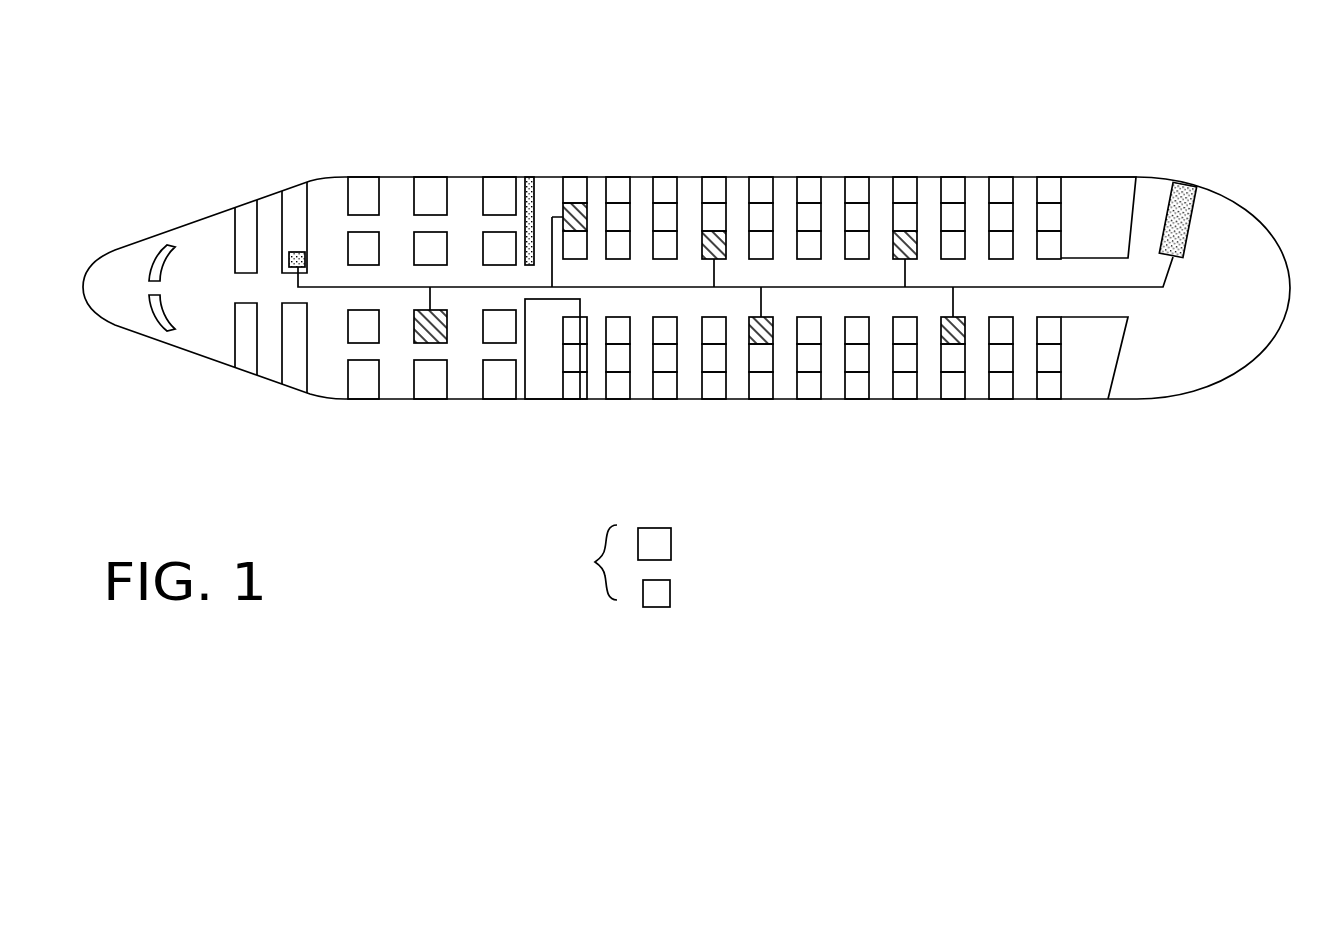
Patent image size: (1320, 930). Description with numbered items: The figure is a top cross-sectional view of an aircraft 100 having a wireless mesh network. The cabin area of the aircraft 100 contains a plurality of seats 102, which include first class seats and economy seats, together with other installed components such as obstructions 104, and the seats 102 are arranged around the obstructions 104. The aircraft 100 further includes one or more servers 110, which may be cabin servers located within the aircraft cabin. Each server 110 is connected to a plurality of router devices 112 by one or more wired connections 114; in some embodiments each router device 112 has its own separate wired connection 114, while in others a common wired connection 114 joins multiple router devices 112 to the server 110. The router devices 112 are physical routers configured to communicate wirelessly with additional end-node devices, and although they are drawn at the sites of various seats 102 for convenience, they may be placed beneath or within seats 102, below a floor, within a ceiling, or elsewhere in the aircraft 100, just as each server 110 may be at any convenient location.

The aircraft 100 is at (347, 102).
The seats 102 is at (704, 393).
The obstructions 104 is at (302, 185).
The server 110 is at (285, 250).
The router device 112 is at (582, 217).
The wired connection 114 is at (1132, 290).